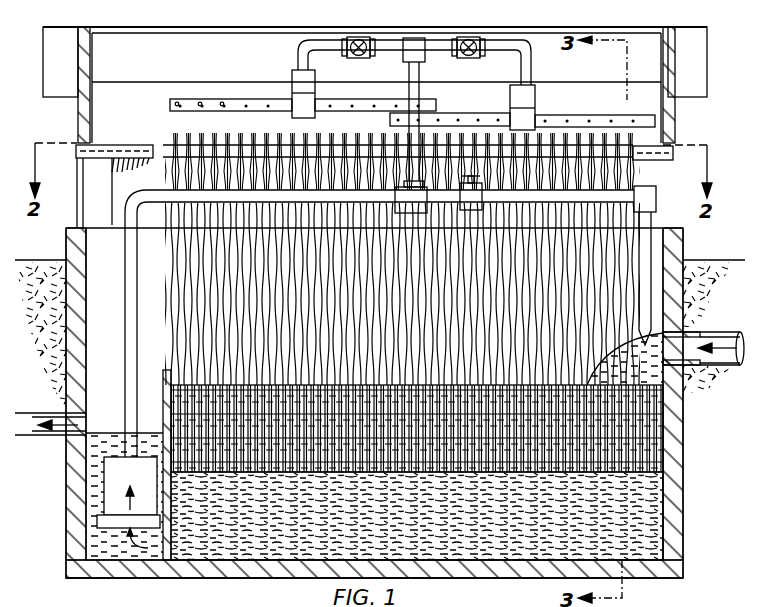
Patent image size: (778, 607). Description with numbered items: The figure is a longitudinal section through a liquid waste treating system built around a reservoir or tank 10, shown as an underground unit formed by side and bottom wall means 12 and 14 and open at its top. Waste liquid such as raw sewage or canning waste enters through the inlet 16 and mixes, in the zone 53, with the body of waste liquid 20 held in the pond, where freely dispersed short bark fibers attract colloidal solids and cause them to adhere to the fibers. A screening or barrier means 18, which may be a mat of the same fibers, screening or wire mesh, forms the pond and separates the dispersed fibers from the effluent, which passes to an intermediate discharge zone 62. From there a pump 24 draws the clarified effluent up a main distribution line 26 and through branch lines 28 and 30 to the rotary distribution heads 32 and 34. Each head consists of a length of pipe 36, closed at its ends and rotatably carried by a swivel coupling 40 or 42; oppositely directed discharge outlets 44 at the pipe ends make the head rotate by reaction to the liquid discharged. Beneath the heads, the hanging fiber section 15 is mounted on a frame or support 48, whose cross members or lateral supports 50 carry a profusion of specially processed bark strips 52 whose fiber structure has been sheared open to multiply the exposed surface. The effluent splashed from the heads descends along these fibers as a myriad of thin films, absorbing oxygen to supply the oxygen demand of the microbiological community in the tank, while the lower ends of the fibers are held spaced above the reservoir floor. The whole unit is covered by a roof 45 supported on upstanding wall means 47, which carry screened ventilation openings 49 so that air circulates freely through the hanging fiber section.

The reservoir or tank 10 is at (103, 582).
The side wall means 12 is at (665, 535).
The bottom wall means 14 is at (490, 580).
The hanging fiber section 15 is at (276, 72).
The inlet 16 is at (714, 330).
The screening or barrier means 18 is at (168, 368).
The body of waste liquid 20 is at (633, 490).
The pump 24 is at (118, 478).
The main distribution line 26 is at (125, 360).
The branch line 28 is at (297, 62).
The branch line 30 is at (528, 62).
The distribution head 32 is at (170, 105).
The distribution head 34 is at (595, 108).
The pipe 36 is at (357, 108).
The swivel coupling 40 is at (358, 60).
The swivel coupling 42 is at (468, 60).
The discharge outlets 44 is at (222, 102).
The roof 45 is at (55, 76).
The upstanding wall means 47 is at (83, 108).
The frame or support 48 is at (673, 153).
The ventilation openings 49 is at (76, 200).
The cross members or lateral supports 50 is at (374, 592).
The bark strips 52 is at (215, 305).
The zone 53 is at (630, 402).
The intermediate discharge zone 62 is at (100, 540).